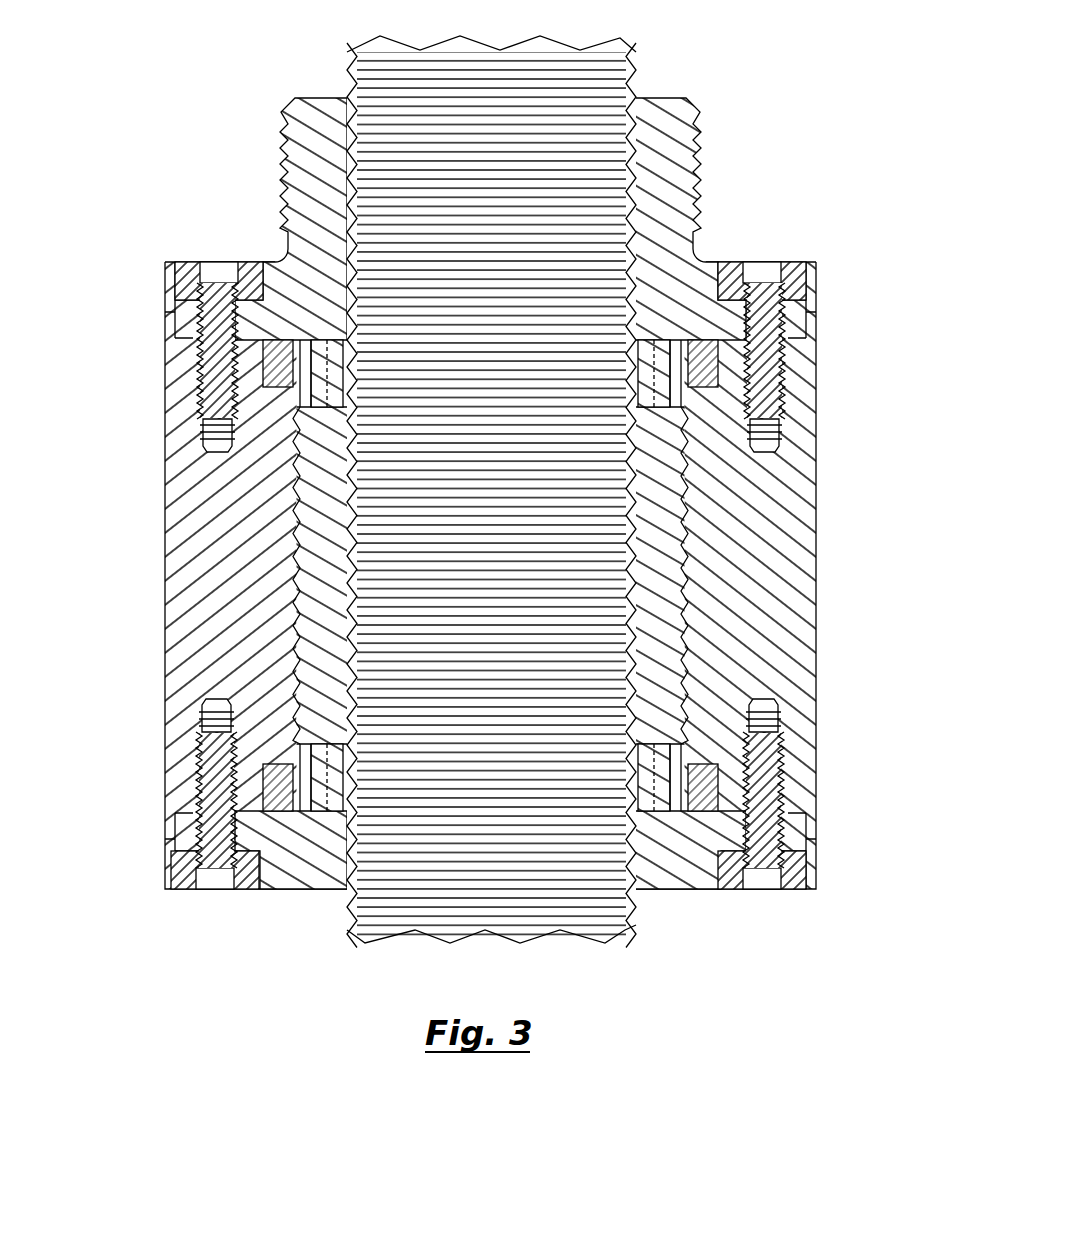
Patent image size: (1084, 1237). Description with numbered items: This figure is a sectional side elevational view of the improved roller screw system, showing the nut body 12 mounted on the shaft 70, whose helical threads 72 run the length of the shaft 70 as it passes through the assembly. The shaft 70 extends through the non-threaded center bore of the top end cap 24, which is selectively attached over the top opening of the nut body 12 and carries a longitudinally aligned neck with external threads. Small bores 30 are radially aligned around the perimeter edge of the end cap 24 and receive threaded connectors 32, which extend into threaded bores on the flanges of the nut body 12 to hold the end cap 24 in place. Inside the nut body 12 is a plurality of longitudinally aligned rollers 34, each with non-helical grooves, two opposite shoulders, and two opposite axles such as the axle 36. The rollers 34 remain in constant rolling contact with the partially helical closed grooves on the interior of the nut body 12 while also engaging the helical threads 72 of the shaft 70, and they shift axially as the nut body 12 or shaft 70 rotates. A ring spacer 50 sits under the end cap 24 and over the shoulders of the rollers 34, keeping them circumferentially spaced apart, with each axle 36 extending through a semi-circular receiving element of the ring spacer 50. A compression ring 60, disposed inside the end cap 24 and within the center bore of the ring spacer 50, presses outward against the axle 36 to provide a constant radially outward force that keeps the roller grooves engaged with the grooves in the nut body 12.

The nut body 12 is at (160, 539).
The top end cap 24 is at (268, 203).
The small bores 30 is at (178, 268).
The threaded connectors 32 is at (217, 283).
The rollers 34 is at (318, 642).
The axle 36 is at (323, 380).
The ring spacer 50 is at (705, 376).
The compression ring 60 is at (640, 370).
The shaft 70 is at (342, 46).
The helical threads 72 is at (605, 62).